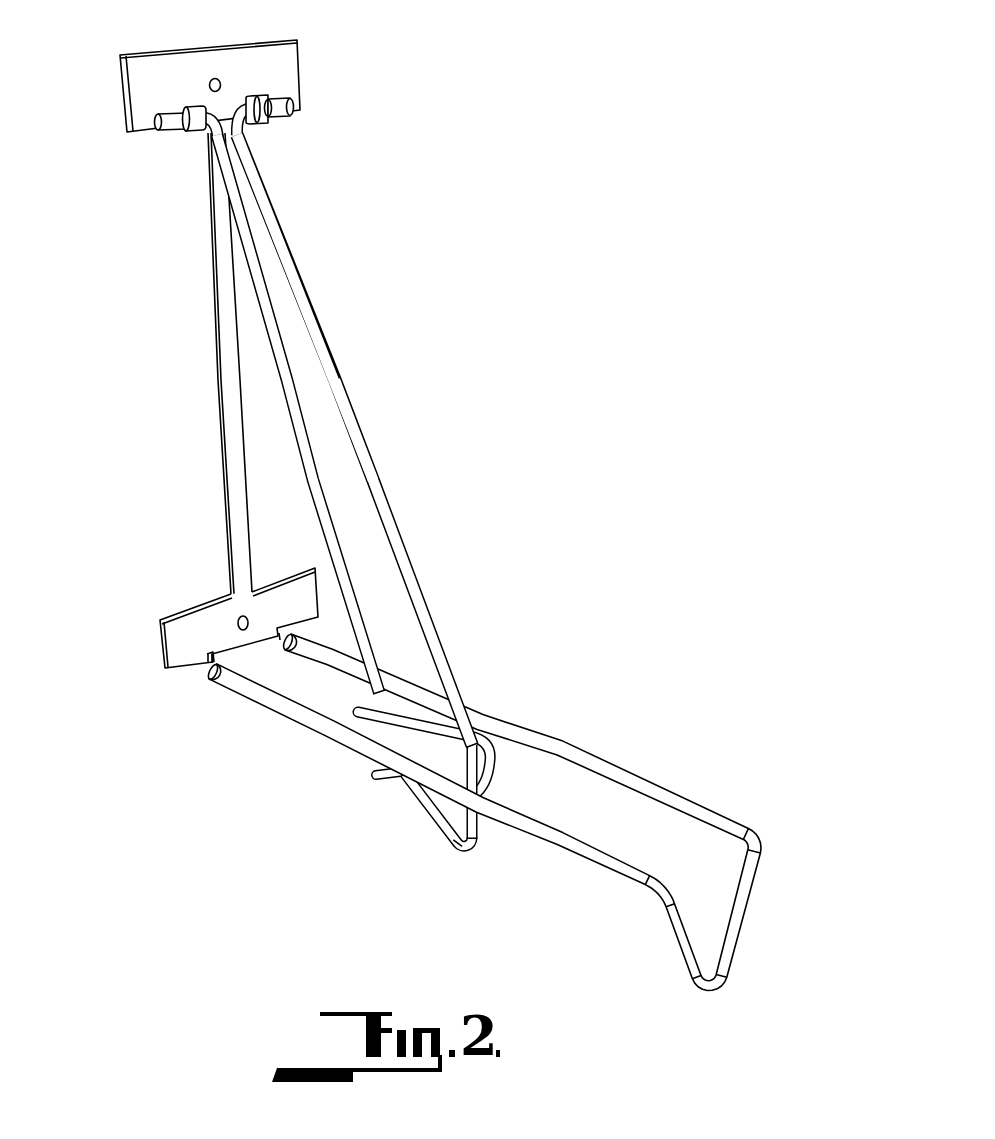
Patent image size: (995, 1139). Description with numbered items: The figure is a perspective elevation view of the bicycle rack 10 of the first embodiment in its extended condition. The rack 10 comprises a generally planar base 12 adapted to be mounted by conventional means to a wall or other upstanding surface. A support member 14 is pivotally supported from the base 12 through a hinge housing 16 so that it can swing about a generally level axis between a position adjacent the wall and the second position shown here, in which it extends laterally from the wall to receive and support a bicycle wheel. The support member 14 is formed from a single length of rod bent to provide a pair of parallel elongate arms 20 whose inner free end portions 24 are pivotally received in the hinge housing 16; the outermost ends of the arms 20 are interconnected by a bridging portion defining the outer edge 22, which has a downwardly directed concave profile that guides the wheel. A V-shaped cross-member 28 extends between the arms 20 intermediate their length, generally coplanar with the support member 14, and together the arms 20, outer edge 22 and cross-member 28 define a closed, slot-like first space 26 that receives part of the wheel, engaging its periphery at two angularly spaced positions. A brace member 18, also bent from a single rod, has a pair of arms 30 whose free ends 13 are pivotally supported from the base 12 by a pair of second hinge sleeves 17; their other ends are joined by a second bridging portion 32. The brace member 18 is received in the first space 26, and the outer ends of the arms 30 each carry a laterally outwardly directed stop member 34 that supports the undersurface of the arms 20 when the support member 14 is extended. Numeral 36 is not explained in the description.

The rack 10 is at (392, 406).
The base 12 is at (184, 401).
The free ends 13 is at (287, 113).
The support member 14 is at (786, 867).
The hinge housing 16 is at (233, 656).
The second hinge sleeves 17 is at (193, 110).
The brace member 18 is at (320, 331).
The arms 20 is at (563, 753).
The outer edge 22 is at (737, 913).
The free end portions 24 is at (287, 652).
The first space 26 is at (523, 763).
The cross-member 28 is at (406, 705).
The arms 30 is at (325, 519).
The second bridging portion 32 is at (465, 842).
The stop member 34 is at (390, 772).
The strut portion 36 is at (325, 420).